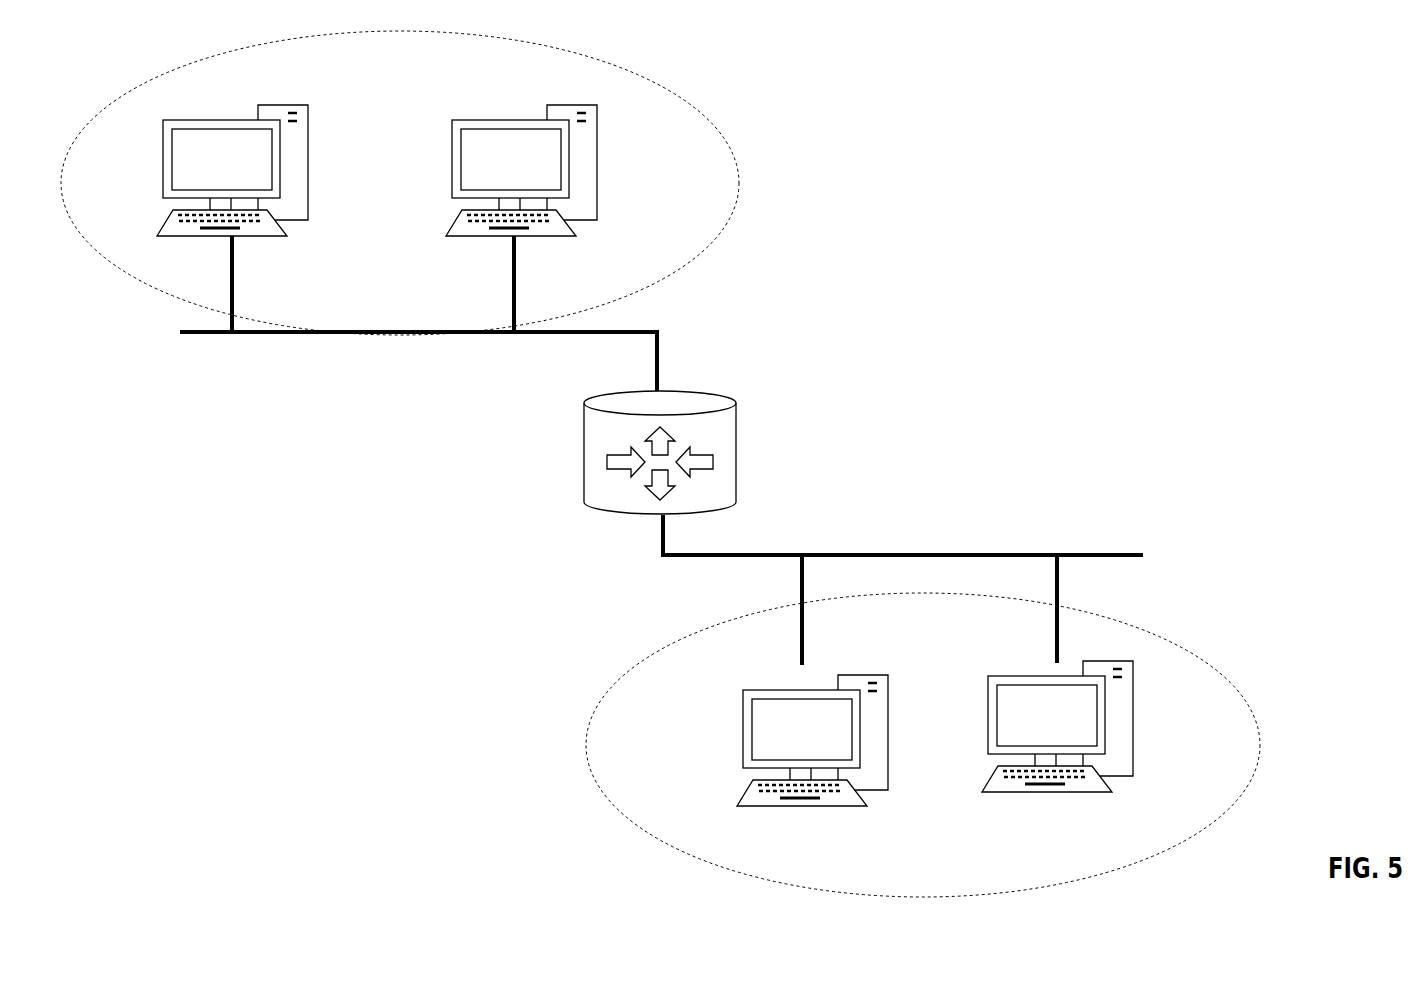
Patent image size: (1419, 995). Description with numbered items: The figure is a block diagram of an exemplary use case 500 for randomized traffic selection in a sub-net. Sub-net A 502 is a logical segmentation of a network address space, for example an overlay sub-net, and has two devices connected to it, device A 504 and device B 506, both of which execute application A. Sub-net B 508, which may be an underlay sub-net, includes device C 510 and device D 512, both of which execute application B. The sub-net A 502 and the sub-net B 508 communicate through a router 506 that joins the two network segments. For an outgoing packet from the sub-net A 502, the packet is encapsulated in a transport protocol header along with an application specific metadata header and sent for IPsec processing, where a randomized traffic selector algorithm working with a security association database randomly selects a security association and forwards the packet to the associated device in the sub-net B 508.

The network system 500 is at (1232, 78).
The sub-net A 502 is at (400, 211).
The device A 504 is at (232, 159).
The device B 506 is at (785, 319).
The sub-net B 508 is at (923, 726).
The device C 510 is at (803, 761).
The device D 512 is at (1045, 751).